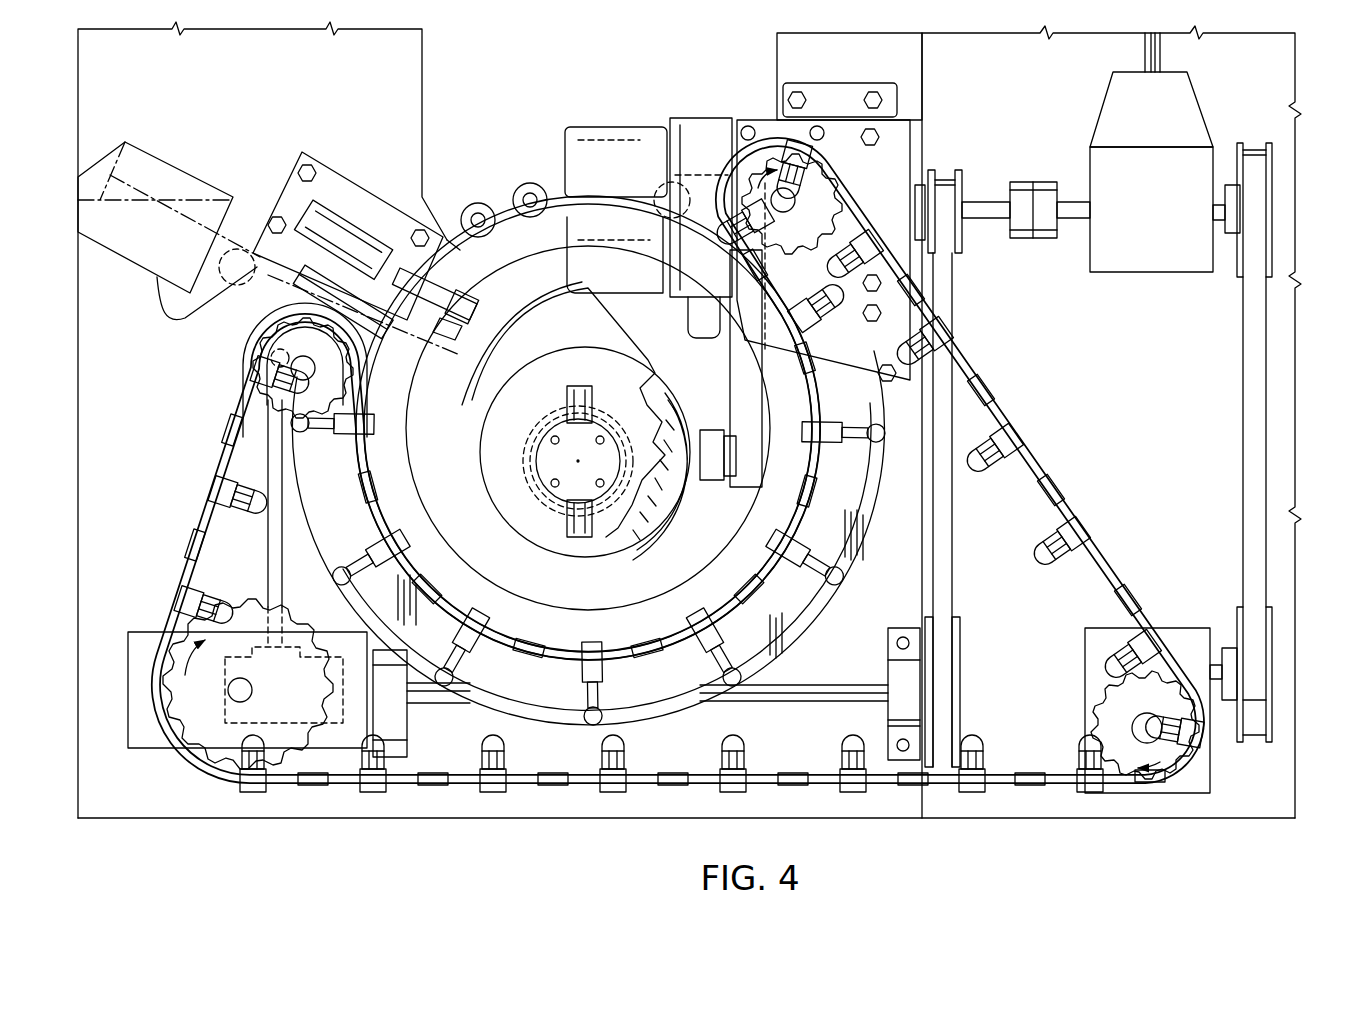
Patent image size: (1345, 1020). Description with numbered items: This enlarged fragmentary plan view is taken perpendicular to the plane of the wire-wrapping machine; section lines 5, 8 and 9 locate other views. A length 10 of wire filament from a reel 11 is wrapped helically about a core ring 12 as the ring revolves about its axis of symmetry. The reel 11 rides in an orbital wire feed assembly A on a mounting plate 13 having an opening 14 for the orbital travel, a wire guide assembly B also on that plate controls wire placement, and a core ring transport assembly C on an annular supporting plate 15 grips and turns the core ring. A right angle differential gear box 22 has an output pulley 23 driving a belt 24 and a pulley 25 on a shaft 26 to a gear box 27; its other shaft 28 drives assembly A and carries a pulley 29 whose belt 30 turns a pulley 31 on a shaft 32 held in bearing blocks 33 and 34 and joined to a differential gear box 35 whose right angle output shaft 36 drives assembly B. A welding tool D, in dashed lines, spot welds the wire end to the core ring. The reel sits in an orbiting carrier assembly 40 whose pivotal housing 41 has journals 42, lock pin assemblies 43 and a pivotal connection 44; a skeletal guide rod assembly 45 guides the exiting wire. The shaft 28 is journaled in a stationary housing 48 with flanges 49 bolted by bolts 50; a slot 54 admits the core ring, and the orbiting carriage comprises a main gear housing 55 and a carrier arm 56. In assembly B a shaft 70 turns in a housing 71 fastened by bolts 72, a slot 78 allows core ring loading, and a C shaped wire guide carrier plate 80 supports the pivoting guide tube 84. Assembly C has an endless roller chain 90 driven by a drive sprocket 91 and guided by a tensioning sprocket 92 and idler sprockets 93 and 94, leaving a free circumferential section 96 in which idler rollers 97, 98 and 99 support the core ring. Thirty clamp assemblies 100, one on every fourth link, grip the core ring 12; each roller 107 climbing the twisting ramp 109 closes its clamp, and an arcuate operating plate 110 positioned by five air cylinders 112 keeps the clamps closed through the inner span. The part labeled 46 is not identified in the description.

The length of wire filament 10 is at (515, 263).
The reel 11 is at (515, 537).
The core ring 12 is at (452, 218).
The mounting plate 13 is at (76, 358).
The opening 14 is at (424, 84).
The annular supporting plate 15 is at (442, 547).
The right angle differential gear box 22 is at (1152, 262).
The output pulley 23 is at (1272, 243).
The belt 24 is at (1260, 443).
The pulley 25 is at (1270, 668).
The shaft 26 is at (1215, 650).
The gear box 27 is at (1090, 678).
The shaft 28 is at (1068, 220).
The pulley 29 is at (960, 243).
The belt 30 is at (953, 556).
The pulley 31 is at (956, 654).
The shaft 32 is at (790, 698).
The bearing block 33 is at (888, 672).
The bearing block 34 is at (400, 708).
The differential gear box 35 is at (345, 750).
The right angle output shaft 36 is at (267, 575).
The orbiting carrier assembly 40 is at (663, 563).
The pivotal housing 41 is at (690, 506).
The journals 42 is at (553, 488).
The lock pin assemblies 43 is at (577, 535).
The pivotal connection 44 is at (705, 432).
The skeletal guide rod assembly 45 is at (534, 316).
The plate 46 is at (492, 395).
The stationary housing 48 is at (700, 120).
The flanges 49 is at (867, 100).
The bolts 50 is at (807, 100).
The slot 54 is at (610, 200).
The main gear housing 55 is at (628, 127).
The carrier arm 56 is at (720, 364).
The shaft 70 is at (333, 232).
The housing 71 is at (355, 220).
The bolts 72 is at (275, 215).
The slot 78 is at (398, 280).
The wire guide carrier plate 80 is at (438, 328).
The guide tube 84 is at (326, 370).
The endless roller chain 90 is at (1032, 462).
The drive sprocket 91 is at (1100, 712).
The tensioning sprocket 92 is at (280, 748).
The idler sprocket 93 is at (245, 468).
The idler sprocket 94 is at (843, 188).
The free circumferential section 96 is at (455, 166).
The idler roller 97 is at (478, 203).
The idler roller 98 is at (523, 190).
The idler roller 99 is at (665, 218).
The clamp assemblies 100 is at (633, 746).
The roller 107 is at (568, 708).
The ramp 109 is at (262, 417).
The arcuate operating plate 110 is at (866, 520).
The air cylinders 112 is at (327, 513).
The section line 5 is at (640, 73).
The section line 8 is at (256, 165).
The section line 9 is at (360, 305).
The orbital wire feed assembly A is at (677, 90).
The wire guide assembly B is at (400, 165).
The core ring transport assembly C is at (190, 397).
The welding tool D is at (163, 160).